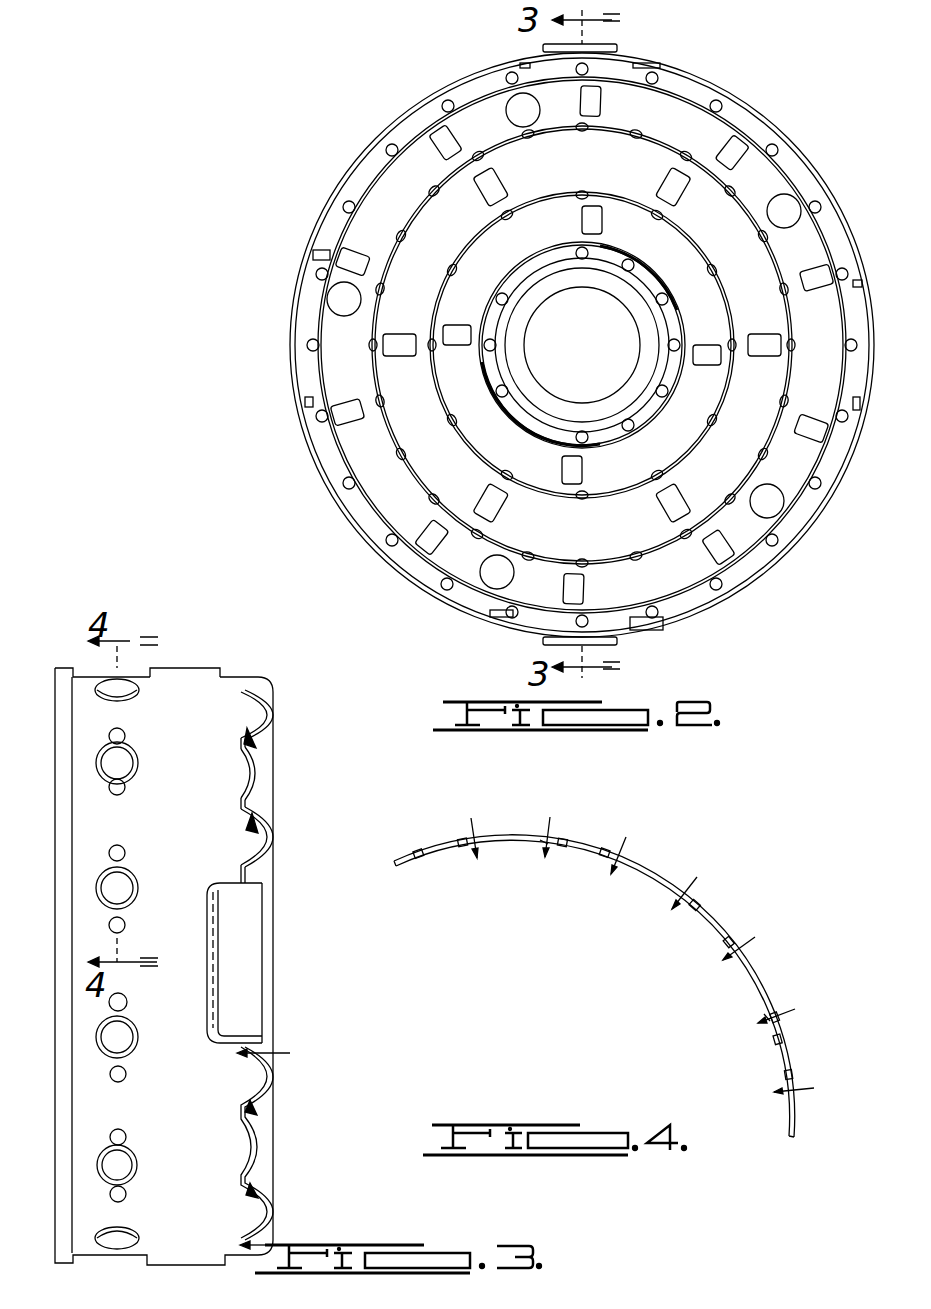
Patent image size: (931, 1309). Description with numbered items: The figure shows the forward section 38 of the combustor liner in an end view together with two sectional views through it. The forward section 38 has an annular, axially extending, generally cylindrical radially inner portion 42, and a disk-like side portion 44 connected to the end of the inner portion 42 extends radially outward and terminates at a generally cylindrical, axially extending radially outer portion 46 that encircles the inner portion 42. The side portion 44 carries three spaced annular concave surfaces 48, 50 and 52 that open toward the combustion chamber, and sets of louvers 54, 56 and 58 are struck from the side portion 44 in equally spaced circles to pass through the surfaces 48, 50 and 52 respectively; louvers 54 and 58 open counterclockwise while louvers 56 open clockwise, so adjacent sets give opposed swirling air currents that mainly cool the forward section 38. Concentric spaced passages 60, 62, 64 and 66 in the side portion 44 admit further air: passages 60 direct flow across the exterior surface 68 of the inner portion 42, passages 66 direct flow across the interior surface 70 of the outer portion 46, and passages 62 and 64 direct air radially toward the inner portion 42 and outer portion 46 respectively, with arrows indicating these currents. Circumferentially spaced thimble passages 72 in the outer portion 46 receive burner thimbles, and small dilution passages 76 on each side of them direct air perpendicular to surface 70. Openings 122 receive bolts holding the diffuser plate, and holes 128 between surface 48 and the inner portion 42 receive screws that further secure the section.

In FIG. 3, the forward section 38 is at (260, 776).
In FIG. 3, the radially inner portion 42 is at (253, 902).
In FIG. 3, the side portion 44 is at (265, 833).
In FIG. 3, the radially outer portion 46 is at (232, 677).
In FIG. 4, the radially outer portion 46 is at (503, 833).
In FIG. 3, the annular concave surface 48 is at (263, 840).
In FIG. 3, the annular concave surface 50 is at (255, 783).
In FIG. 3, the annular concave surface 52 is at (265, 708).
In FIG. 2, the louvers 54 is at (582, 218).
In FIG. 2, the louvers 56 is at (482, 192).
In FIG. 2, the louvers 58 is at (440, 147).
In FIG. 2, the passages 60 is at (677, 298).
In FIG. 3, the passages 60 is at (237, 868).
In FIG. 2, the passages 62 is at (498, 468).
In FIG. 3, the passages 62 is at (255, 815).
In FIG. 2, the passages 64 is at (432, 497).
In FIG. 3, the passages 64 is at (255, 742).
In FIG. 2, the passages 66 is at (370, 524).
In FIG. 3, the passages 66 is at (240, 685).
In FIG. 3, the exterior surface 68 is at (237, 1043).
In FIG. 3, the interior surface 70 is at (158, 682).
In FIG. 3, the thimble passages 72 is at (103, 773).
In FIG. 4, the thimble passages 72 is at (425, 855).
In FIG. 3, the dilution passages 76 is at (124, 734).
In FIG. 4, the dilution passages 76 is at (513, 870).
In FIG. 2, the openings 122 is at (512, 108).
In FIG. 2, the holes 128 is at (633, 241).